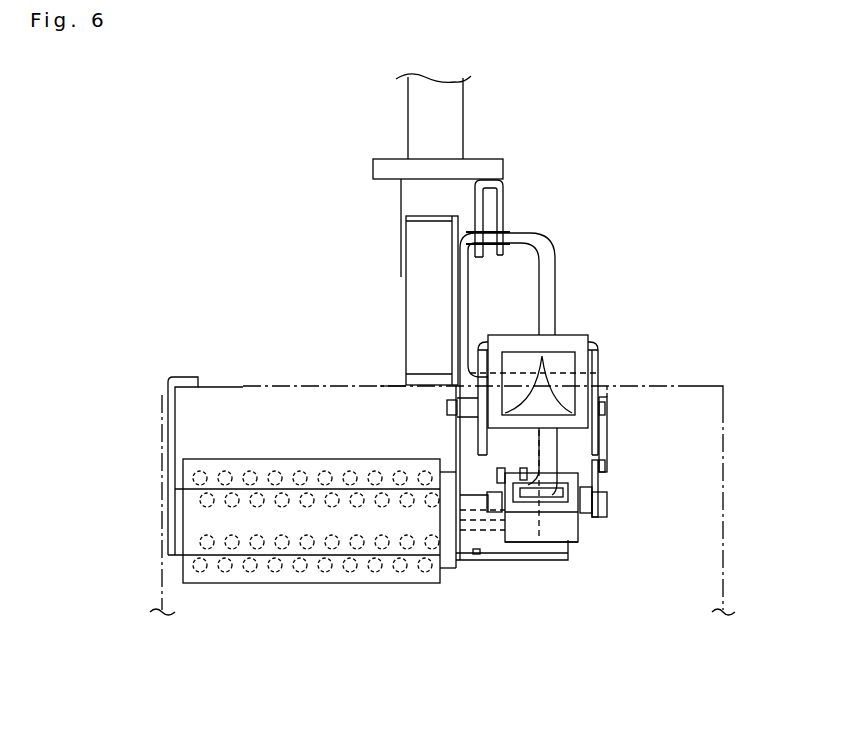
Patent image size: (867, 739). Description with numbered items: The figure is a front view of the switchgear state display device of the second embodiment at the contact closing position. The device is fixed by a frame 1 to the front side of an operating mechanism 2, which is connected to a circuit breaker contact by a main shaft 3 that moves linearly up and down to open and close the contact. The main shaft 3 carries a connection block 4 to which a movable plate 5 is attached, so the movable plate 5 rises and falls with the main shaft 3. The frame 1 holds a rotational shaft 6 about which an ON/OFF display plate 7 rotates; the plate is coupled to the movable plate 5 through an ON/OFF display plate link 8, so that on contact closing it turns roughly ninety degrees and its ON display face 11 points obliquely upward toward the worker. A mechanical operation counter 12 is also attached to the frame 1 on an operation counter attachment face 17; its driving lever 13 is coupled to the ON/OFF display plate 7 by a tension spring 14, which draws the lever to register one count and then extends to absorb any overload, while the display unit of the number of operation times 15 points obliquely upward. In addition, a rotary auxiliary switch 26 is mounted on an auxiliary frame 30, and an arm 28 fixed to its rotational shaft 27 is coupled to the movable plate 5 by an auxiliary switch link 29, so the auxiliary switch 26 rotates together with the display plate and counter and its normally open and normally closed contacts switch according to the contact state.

The frame 1 is at (417, 302).
The operating mechanism 2 is at (185, 415).
The main shaft 3 is at (463, 101).
The connection block 4 is at (503, 170).
The movable plate 5 is at (503, 208).
The rotational shaft 6 is at (447, 406).
The ON/OFF display plate 7 is at (600, 355).
The ON/OFF display plate link 8 is at (466, 303).
The ON display face 11 is at (556, 352).
The operation counter 12 is at (562, 540).
The driving lever 13 is at (607, 510).
The tension spring 14 is at (607, 441).
The display unit of the number of operation times 15 is at (568, 495).
The operation counter attachment face 17 is at (492, 558).
The rotary auxiliary switch 26 is at (312, 583).
The rotational shaft 27 is at (476, 548).
The arm 28 is at (525, 550).
The auxiliary switch link 29 is at (555, 262).
The auxiliary frame 30 is at (188, 377).